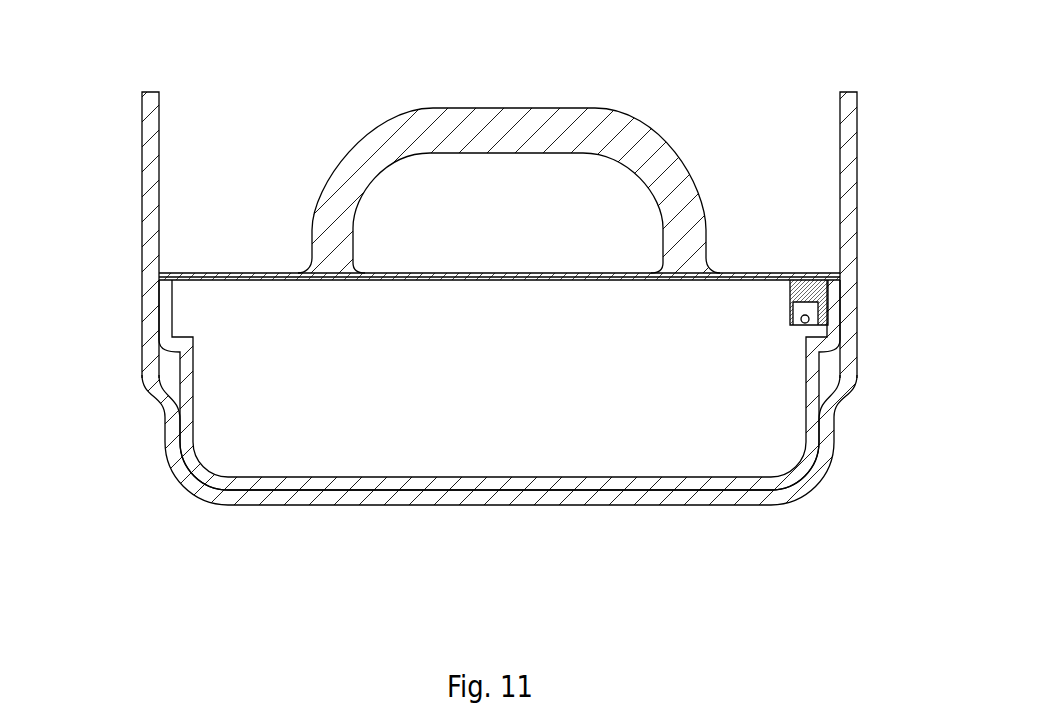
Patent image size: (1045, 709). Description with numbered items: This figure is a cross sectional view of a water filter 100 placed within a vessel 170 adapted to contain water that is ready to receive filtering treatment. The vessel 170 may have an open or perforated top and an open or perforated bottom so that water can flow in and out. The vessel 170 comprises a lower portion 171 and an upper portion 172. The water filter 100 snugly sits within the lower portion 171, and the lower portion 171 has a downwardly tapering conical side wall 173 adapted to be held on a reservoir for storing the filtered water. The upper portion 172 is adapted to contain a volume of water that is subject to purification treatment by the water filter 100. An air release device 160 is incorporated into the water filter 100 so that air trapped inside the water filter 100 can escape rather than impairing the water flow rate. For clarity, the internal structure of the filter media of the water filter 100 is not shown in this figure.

The water filter 100 is at (487, 336).
The air release device 160 is at (820, 325).
The vessel 170 is at (853, 90).
The lower portion 171 is at (150, 368).
The upper portion 172 is at (147, 238).
The downwardly tapering conical side wall 173 is at (175, 470).